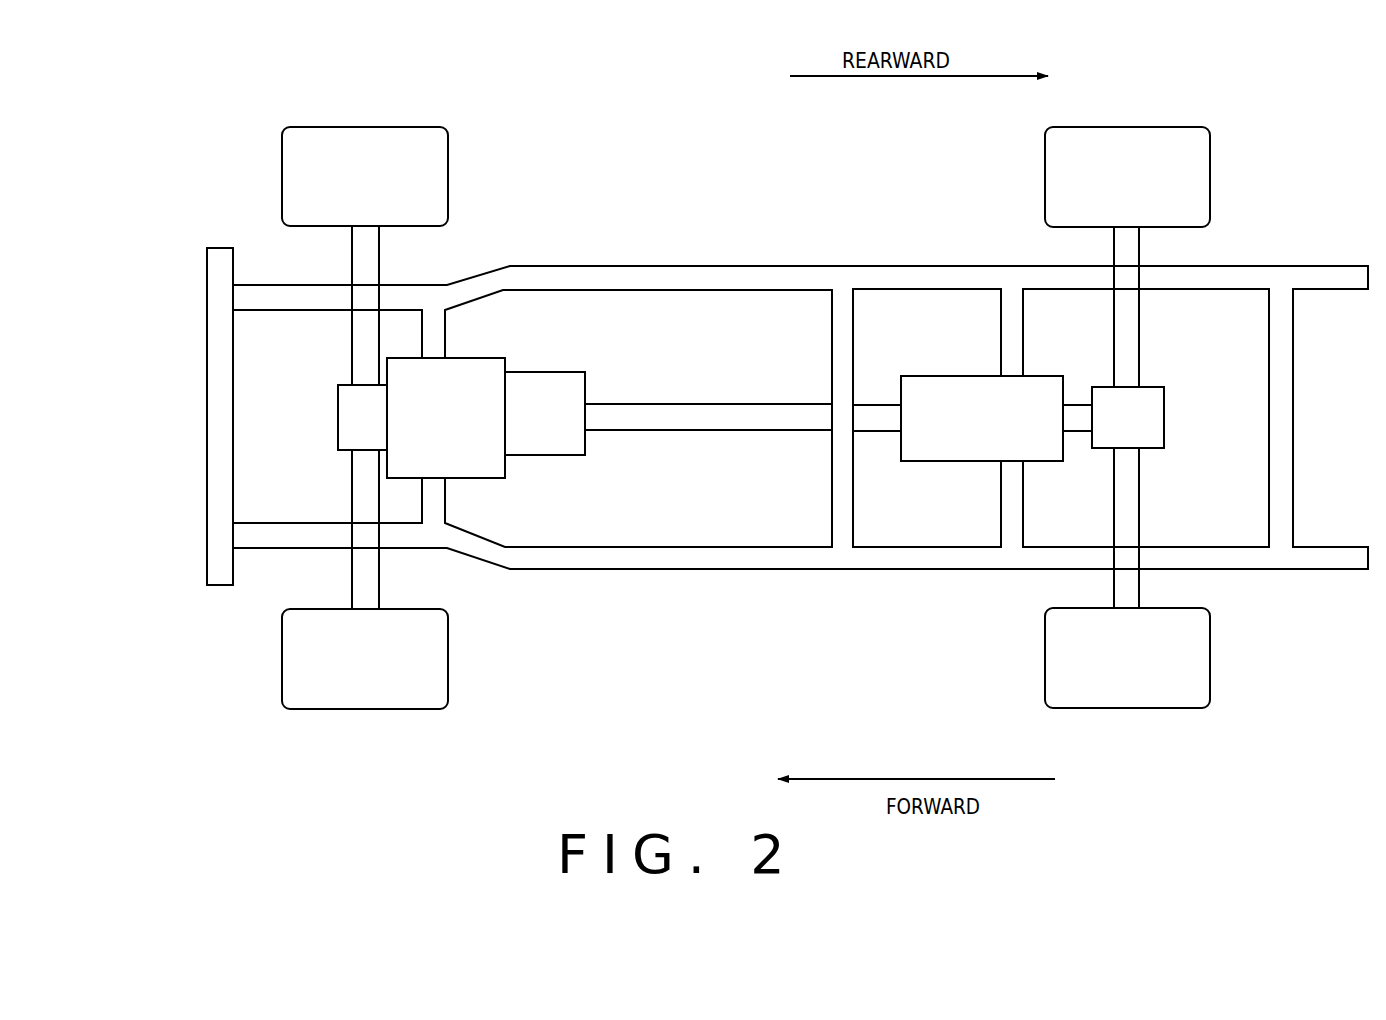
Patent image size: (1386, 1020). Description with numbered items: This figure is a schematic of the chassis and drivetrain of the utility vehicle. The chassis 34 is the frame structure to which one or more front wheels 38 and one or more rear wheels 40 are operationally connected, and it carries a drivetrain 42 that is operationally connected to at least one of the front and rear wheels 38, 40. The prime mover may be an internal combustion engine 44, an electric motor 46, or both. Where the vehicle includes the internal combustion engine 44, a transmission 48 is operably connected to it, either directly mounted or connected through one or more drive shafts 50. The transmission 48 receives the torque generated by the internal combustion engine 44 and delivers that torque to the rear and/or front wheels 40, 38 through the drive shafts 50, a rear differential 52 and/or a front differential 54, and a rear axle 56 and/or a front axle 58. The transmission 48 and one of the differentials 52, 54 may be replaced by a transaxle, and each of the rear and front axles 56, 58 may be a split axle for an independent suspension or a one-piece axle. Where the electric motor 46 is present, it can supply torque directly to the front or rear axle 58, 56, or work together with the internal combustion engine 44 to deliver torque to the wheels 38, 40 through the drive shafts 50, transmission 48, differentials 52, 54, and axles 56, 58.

The chassis 34 is at (207, 427).
The front wheels 38 is at (367, 150).
The rear wheels 40 is at (1127, 148).
The drivetrain 42 is at (312, 385).
The internal combustion engine 44 is at (467, 385).
The electric motor 46 is at (573, 455).
The transmission 48 is at (921, 450).
The drive shaft 50 is at (607, 417).
The rear differential 52 is at (1147, 432).
The front differential 54 is at (360, 408).
The rear axle 56 is at (1123, 350).
The front axle 58 is at (367, 343).